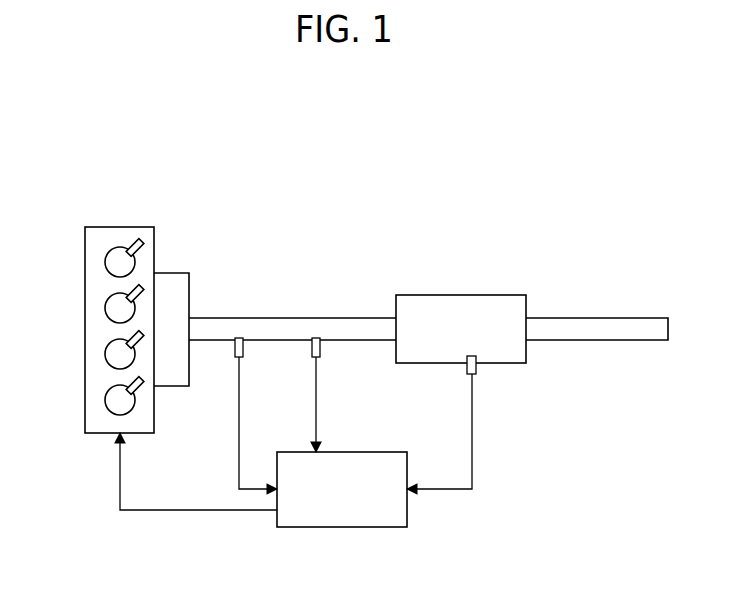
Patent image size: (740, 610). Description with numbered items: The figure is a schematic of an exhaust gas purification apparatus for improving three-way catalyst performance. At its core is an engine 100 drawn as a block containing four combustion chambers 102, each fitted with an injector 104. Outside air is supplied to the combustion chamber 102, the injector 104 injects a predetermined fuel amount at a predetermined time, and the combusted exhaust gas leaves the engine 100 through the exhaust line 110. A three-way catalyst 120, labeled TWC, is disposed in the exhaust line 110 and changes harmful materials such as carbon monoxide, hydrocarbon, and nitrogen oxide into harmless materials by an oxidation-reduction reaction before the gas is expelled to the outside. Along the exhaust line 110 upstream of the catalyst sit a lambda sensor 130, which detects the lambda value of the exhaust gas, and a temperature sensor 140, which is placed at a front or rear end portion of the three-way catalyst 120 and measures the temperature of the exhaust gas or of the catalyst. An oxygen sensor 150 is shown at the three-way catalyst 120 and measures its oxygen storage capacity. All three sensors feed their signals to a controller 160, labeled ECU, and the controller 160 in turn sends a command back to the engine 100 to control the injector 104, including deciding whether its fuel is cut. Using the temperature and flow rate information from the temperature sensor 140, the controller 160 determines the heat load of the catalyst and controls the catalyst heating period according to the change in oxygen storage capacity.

The engine 100 is at (118, 227).
The combustion chamber 102 is at (113, 263).
The injector 104 is at (141, 246).
The exhaust line 110 is at (278, 327).
The three-way catalyst 120 is at (460, 294).
The lambda sensor 130 is at (243, 346).
The temperature sensor 140 is at (320, 346).
The oxygen sensor 150 is at (477, 366).
The controller 160 is at (343, 528).